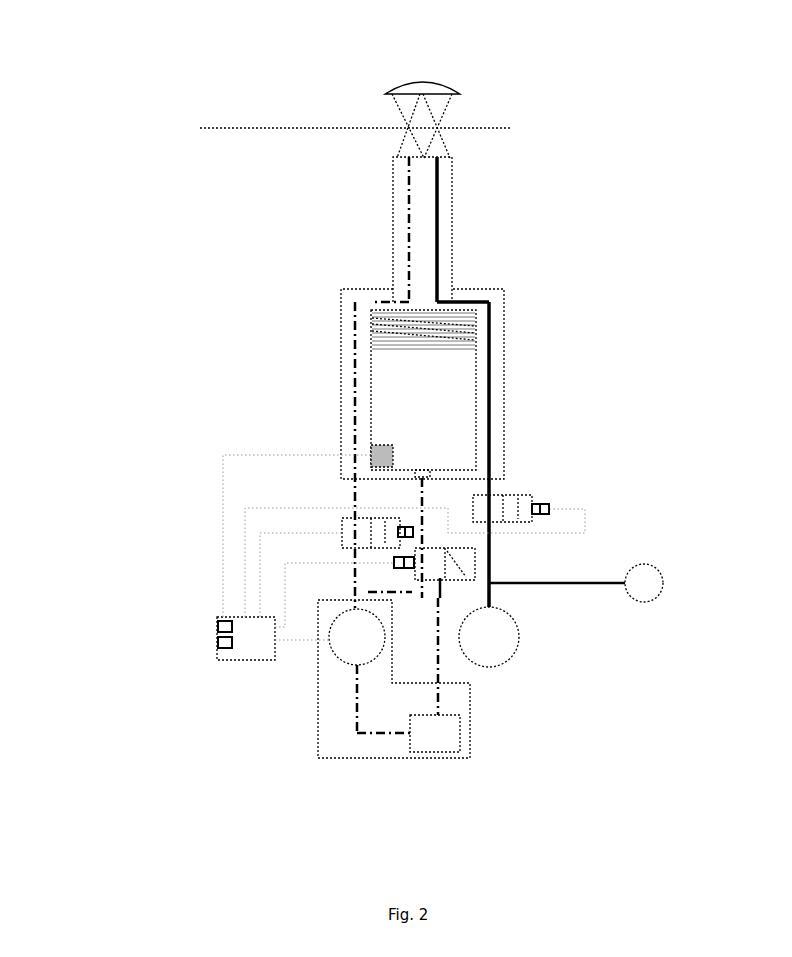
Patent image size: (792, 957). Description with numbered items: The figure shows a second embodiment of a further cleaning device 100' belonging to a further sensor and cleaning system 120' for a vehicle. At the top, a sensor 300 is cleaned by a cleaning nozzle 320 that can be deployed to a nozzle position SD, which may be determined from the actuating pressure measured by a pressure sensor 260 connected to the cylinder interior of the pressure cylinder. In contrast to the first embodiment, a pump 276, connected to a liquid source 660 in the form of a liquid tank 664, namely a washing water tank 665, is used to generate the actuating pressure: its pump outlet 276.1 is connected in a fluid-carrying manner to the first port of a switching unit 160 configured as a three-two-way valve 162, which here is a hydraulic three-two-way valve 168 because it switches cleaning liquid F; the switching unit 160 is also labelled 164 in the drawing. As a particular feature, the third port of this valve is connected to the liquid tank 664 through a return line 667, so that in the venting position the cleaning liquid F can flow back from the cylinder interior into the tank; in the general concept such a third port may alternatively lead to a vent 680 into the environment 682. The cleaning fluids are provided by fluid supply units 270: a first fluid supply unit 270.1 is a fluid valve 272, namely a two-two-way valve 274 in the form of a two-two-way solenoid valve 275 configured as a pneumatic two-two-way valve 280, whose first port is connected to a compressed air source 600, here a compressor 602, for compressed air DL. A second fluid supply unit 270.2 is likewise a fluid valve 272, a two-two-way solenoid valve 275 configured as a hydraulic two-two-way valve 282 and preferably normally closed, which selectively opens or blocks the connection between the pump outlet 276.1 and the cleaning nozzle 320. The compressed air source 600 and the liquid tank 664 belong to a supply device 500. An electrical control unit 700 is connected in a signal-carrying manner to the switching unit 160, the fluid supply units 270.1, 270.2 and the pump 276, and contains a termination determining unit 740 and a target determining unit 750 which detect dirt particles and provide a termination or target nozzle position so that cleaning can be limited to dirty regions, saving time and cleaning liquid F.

The further cleaning device 100' is at (482, 250).
The further sensor and cleaning system 120' is at (482, 250).
The sensor 300 is at (423, 80).
The cleaning nozzle 320 is at (392, 145).
The nozzle position SD is at (355, 149).
The cleaning liquid F is at (355, 348).
The compressed air DL is at (490, 340).
The pressure sensor 260 is at (388, 450).
The fluid supply unit 270 is at (374, 498).
The first fluid supply unit 270.1 is at (588, 485).
The second fluid supply unit 270.2 is at (224, 515).
The fluid valve 272 is at (374, 498).
The 2/2-way valve 274 is at (374, 498).
The 2/2-way solenoid valve 275 is at (374, 498).
The pneumatic 2/2-way valve 280 is at (525, 500).
The hydraulic 2/2-way valve 282 is at (347, 522).
The switching unit 160 is at (554, 538).
The 3/2-way valve 162 is at (554, 538).
The valve actuator 164 is at (554, 538).
The hydraulic 3/2-way valve 168 is at (465, 557).
The pump 276 is at (346, 655).
The pump outlet 276.1 is at (356, 600).
The liquid source 660 is at (335, 706).
The return line 667 is at (438, 667).
The liquid tank 664 is at (453, 765).
The washing water tank 665 is at (452, 742).
The compressed air source 600 is at (549, 644).
The compressor 602 is at (505, 655).
The vent 680 is at (619, 590).
The environment 682 is at (655, 592).
The supply device 500 is at (510, 736).
The control unit 700 is at (217, 651).
The termination determining unit 740 is at (217, 626).
The target determining unit 750 is at (217, 643).